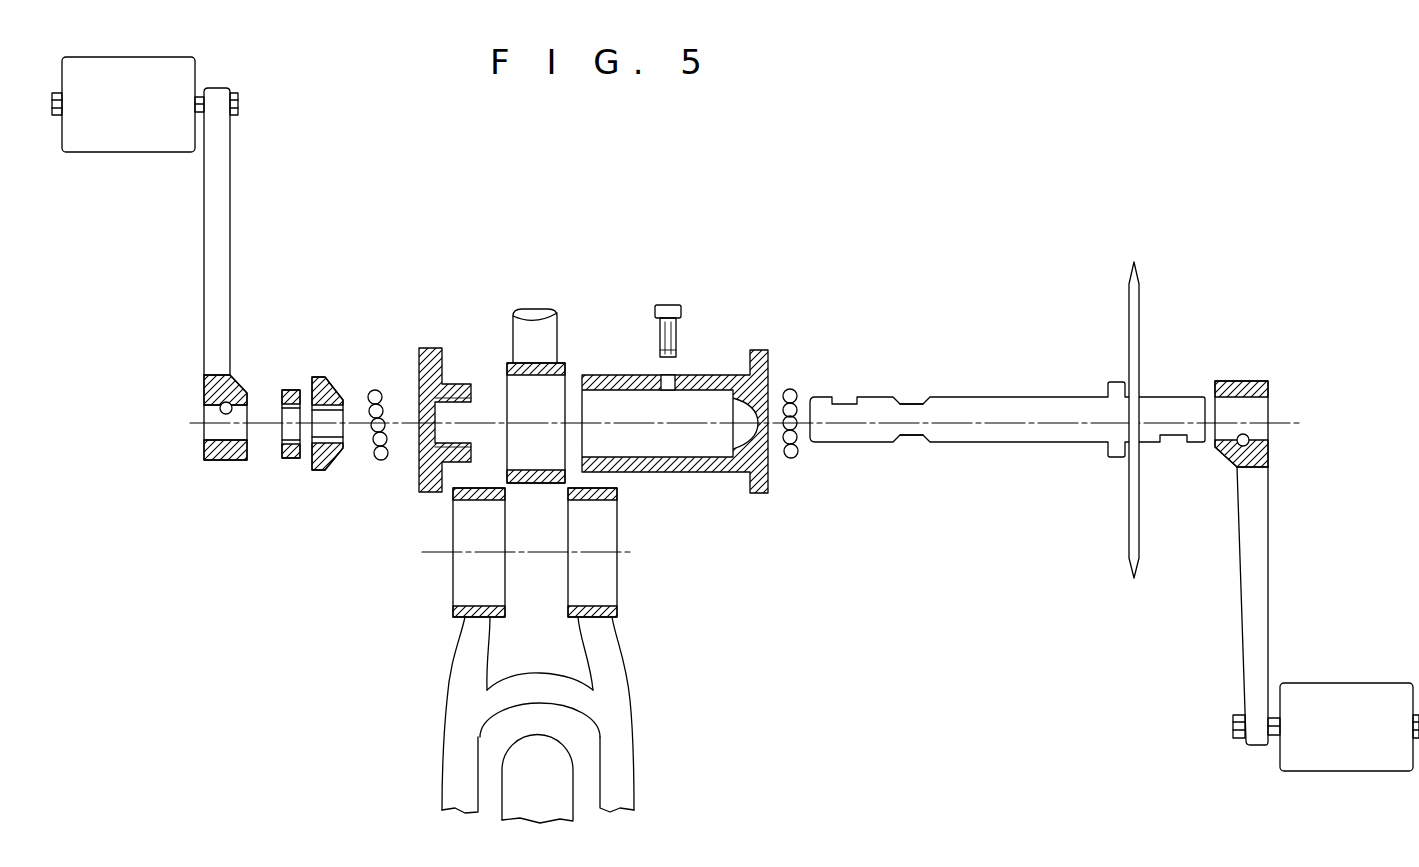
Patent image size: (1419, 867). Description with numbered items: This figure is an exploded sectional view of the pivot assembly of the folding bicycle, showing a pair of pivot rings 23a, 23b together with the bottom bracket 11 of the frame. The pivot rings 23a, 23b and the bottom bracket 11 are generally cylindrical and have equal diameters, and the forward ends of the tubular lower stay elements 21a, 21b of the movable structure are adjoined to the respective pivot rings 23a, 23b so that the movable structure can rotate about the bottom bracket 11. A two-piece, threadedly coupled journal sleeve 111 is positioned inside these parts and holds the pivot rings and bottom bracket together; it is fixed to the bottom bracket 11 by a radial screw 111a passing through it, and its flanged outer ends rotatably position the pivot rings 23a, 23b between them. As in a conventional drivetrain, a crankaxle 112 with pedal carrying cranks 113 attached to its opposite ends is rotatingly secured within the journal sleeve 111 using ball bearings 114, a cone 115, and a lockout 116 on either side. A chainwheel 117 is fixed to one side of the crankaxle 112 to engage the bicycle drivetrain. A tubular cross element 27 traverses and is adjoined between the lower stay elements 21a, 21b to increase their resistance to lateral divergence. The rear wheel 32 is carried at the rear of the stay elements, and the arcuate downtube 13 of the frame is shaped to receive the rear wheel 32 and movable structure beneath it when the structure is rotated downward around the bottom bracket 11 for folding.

The bottom bracket 11 is at (566, 364).
The downtube 13 is at (518, 328).
The journal sleeve 111 is at (714, 372).
The radial screw 111a is at (664, 305).
The crankaxle 112 is at (967, 412).
The pedal carrying cranks 113 is at (1247, 553).
The ball bearings 114 is at (792, 460).
The cone 115 is at (328, 378).
The lockout 116 is at (290, 462).
The chainwheel 117 is at (1140, 292).
The pivot ring 23a is at (602, 532).
The pivot ring 23b is at (468, 579).
The tubular cross element 27 is at (552, 692).
The lower stay element 21a is at (618, 725).
The lower stay element 21b is at (460, 727).
The rear wheel 32 is at (573, 775).